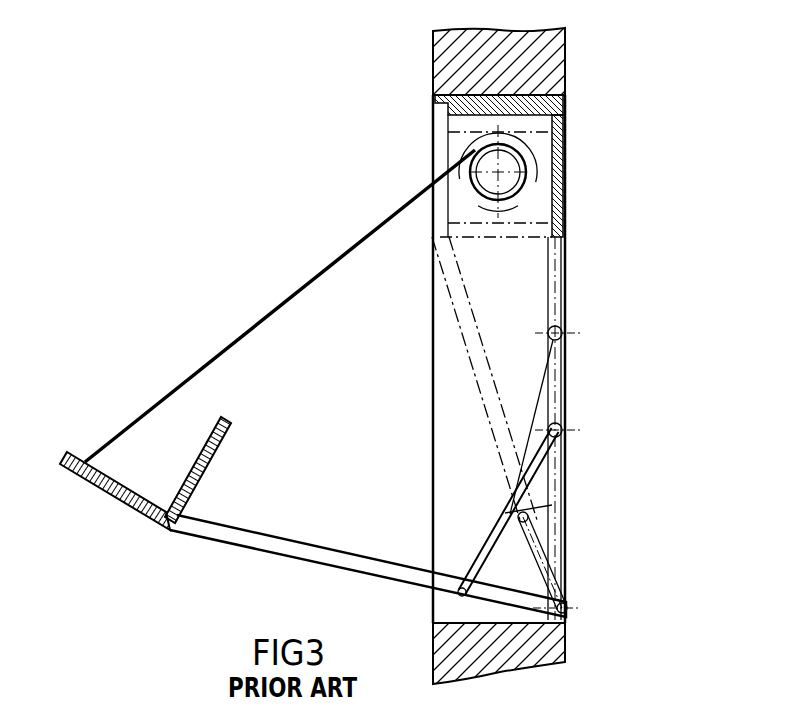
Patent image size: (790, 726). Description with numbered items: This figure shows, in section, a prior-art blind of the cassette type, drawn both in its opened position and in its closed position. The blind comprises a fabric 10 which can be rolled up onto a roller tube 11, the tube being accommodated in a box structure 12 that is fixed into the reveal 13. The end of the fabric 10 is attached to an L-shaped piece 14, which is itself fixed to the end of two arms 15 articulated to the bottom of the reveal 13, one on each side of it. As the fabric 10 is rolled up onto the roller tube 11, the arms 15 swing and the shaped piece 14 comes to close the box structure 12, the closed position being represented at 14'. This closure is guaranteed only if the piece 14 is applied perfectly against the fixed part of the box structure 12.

The fabric 10 is at (357, 243).
The roller tube 11 is at (510, 163).
The box structure 12 is at (565, 100).
The reveal 13 is at (518, 290).
The L-shaped piece 14 is at (145, 439).
The L-shaped piece in closed position 14' is at (439, 166).
The arms 15 is at (280, 543).